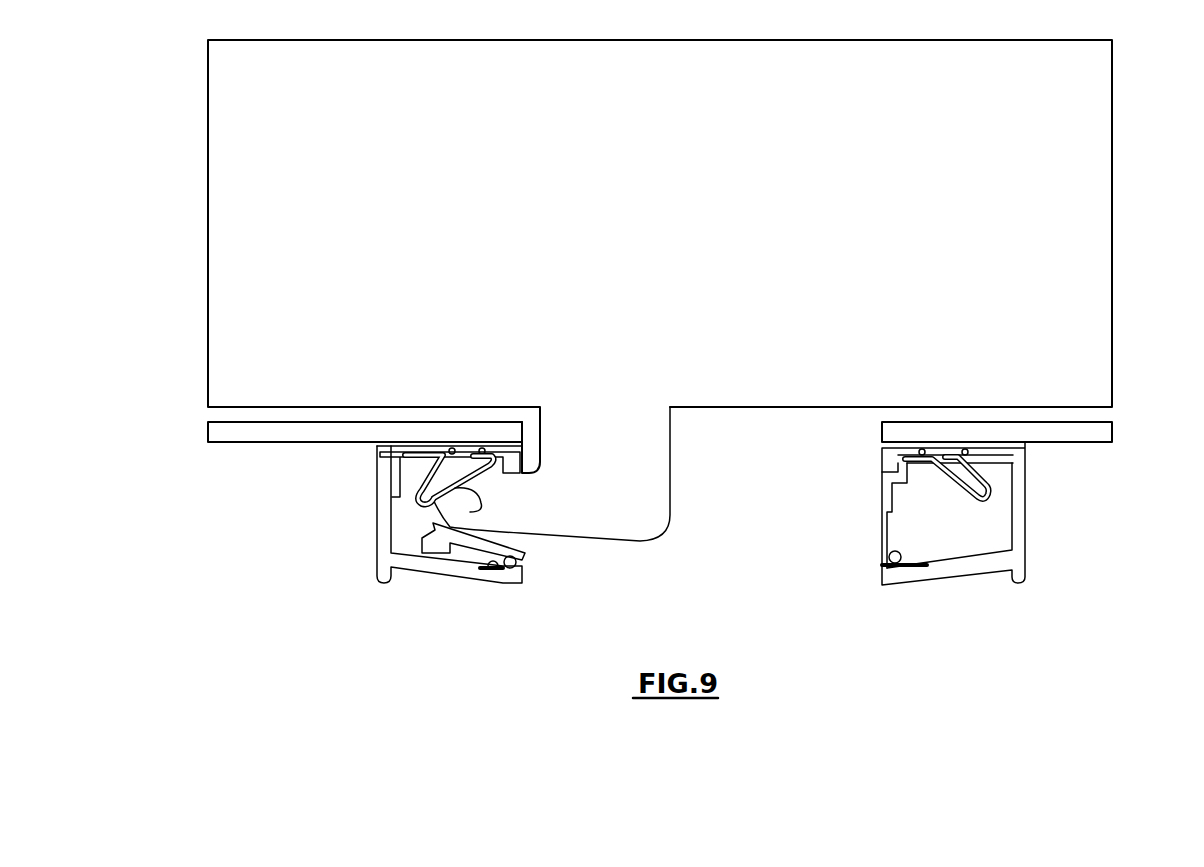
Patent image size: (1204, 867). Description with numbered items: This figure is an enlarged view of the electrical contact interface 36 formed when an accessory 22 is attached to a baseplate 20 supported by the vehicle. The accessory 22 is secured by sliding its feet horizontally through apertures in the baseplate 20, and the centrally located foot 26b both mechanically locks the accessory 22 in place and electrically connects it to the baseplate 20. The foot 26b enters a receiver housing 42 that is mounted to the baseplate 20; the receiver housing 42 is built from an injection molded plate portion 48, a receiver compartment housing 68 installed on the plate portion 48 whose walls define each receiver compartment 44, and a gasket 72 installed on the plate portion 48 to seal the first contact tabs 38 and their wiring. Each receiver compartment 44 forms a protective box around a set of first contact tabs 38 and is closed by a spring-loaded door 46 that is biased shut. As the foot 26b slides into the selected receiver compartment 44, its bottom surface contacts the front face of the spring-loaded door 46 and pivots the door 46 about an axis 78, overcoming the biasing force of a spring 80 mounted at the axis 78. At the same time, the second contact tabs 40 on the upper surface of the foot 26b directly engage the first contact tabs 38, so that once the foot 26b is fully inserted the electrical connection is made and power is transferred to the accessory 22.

The baseplate 20 is at (208, 430).
The accessory 22 is at (1098, 255).
The foot 26b is at (650, 512).
The electrical contact interface 36 is at (420, 549).
The first contact tabs 38 is at (415, 498).
The second contact tabs 40 is at (467, 480).
The receiver housing 42 is at (1118, 498).
The receiver compartment 44 is at (387, 537).
The spring-loaded door 46 is at (448, 542).
The plate portion 48 is at (378, 462).
The receiver compartment housing 68 is at (407, 575).
The gasket 72 is at (373, 447).
The axis 78 is at (516, 565).
The spring 80 is at (498, 575).